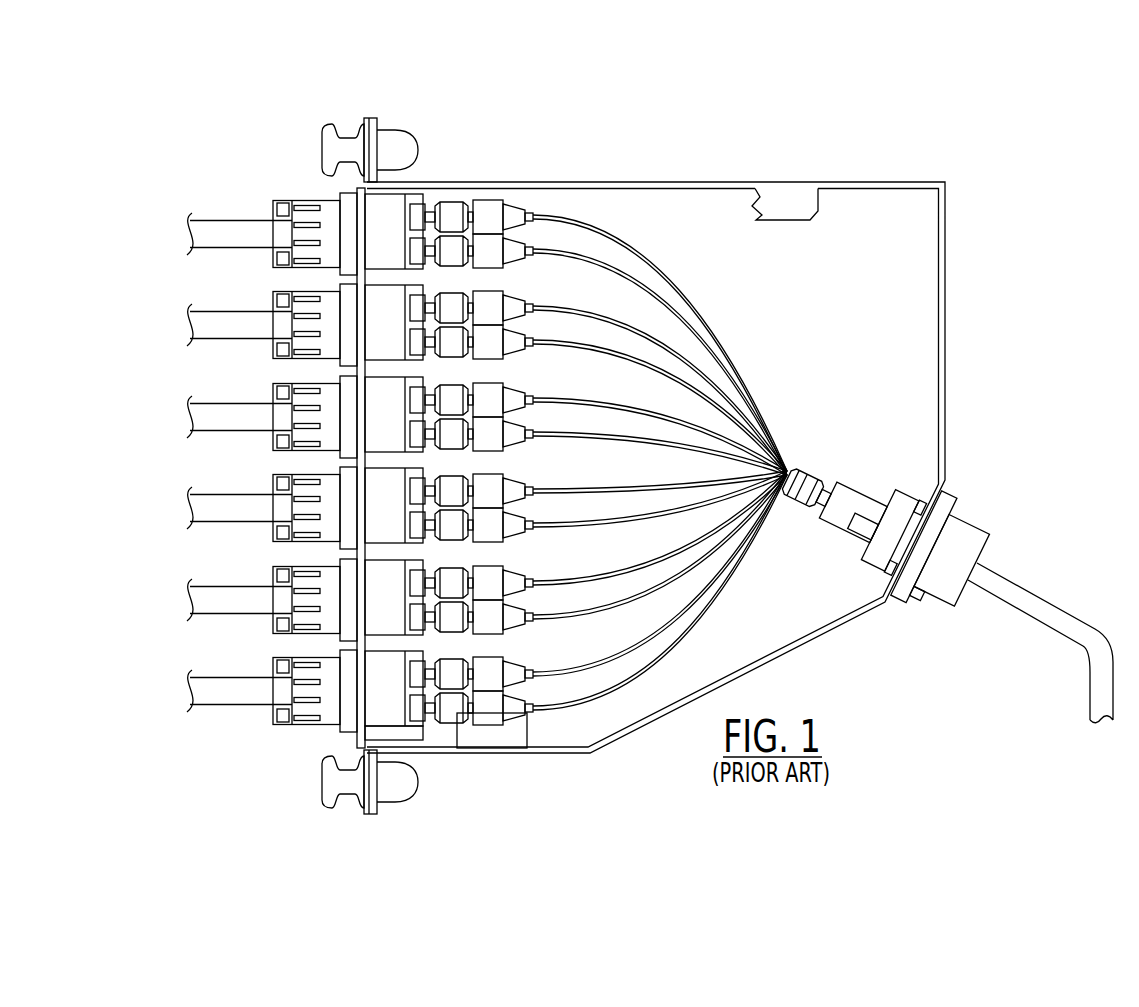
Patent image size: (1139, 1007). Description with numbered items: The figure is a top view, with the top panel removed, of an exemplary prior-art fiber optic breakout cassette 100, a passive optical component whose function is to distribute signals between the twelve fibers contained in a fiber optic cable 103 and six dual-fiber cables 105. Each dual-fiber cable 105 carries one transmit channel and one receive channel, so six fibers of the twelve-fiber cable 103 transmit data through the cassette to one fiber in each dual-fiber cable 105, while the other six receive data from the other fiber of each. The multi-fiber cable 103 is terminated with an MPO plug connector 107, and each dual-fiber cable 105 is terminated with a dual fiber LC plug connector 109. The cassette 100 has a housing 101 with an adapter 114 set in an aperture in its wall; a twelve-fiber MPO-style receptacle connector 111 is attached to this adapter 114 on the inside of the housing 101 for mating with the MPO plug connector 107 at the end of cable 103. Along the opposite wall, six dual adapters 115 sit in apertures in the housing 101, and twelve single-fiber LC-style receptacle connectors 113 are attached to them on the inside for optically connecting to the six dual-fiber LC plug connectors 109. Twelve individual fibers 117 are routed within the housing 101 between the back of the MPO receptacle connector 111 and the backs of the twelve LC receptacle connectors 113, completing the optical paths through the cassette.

The cassette 100 is at (938, 131).
The housing 101 is at (943, 217).
The fiber optic cable 103 is at (1048, 593).
The dual-fiber cable 105 is at (188, 238).
The MPO plug connector 107 is at (973, 520).
The dual fiber LC plug connector 109 is at (300, 268).
The MPO-style receptacle connector 111 is at (842, 517).
The LC-style receptacle connector 113 is at (493, 251).
The adapter 114 is at (908, 492).
The dual adapter 115 is at (400, 247).
The individual fibers 117 is at (663, 353).